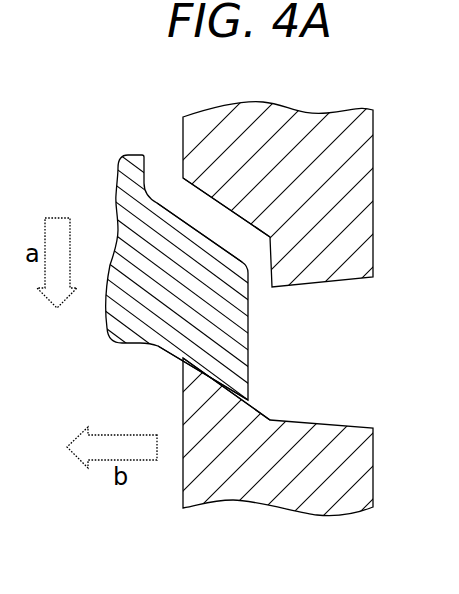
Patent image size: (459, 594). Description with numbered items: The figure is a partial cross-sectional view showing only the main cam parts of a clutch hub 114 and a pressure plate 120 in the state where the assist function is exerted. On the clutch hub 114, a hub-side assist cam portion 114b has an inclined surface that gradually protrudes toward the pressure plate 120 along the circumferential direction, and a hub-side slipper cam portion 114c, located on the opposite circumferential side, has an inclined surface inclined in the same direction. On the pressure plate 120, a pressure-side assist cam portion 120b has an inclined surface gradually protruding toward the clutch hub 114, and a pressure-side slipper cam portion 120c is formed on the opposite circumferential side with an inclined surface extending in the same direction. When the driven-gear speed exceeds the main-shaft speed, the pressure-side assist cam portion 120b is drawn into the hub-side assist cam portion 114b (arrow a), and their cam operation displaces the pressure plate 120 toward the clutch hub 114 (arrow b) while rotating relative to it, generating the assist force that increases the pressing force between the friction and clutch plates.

The clutch hub 114 is at (127, 172).
The hub-side assist cam portion 114b is at (180, 357).
The hub-side slipper cam portion 114c is at (165, 206).
The pressure plate 120 is at (331, 120).
The pressure-side assist cam portion 120b is at (257, 408).
The pressure-side slipper cam portion 120c is at (254, 232).